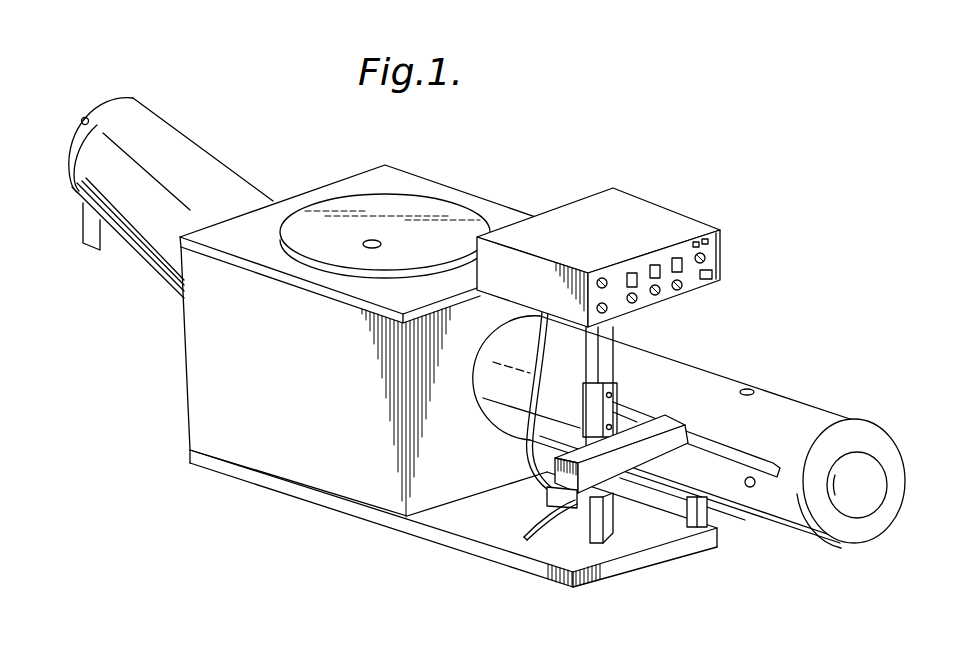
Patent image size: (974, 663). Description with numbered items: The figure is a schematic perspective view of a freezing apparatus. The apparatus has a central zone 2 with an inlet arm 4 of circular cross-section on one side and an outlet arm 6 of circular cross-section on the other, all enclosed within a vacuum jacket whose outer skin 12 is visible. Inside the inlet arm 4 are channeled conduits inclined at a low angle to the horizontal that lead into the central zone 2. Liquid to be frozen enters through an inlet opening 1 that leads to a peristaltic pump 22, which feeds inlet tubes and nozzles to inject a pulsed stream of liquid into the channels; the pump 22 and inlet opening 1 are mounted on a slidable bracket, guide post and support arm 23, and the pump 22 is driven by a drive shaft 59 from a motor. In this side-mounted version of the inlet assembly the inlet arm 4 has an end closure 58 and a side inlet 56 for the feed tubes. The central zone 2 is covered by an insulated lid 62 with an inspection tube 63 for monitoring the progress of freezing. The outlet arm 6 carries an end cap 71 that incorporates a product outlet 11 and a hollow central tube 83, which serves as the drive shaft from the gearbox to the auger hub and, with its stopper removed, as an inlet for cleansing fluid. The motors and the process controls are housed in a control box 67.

The inlet opening 1 is at (530, 537).
The central zone 2 is at (220, 338).
The inlet arm 4 is at (790, 403).
The outlet arm 6 is at (193, 150).
The product outlet 11 is at (87, 240).
The outer skin 12 is at (80, 141).
The peristaltic pump 22 is at (572, 584).
The inlet assembly mounting 23 is at (630, 463).
The side inlet 56 is at (750, 488).
The end closure 58 is at (870, 460).
The drive shaft 59 is at (528, 447).
The insulated lid 62 is at (393, 205).
The inspection tube 63 is at (379, 241).
The control box 67 is at (720, 230).
The end cap 71 is at (67, 167).
The hollow central tube 83 is at (86, 117).